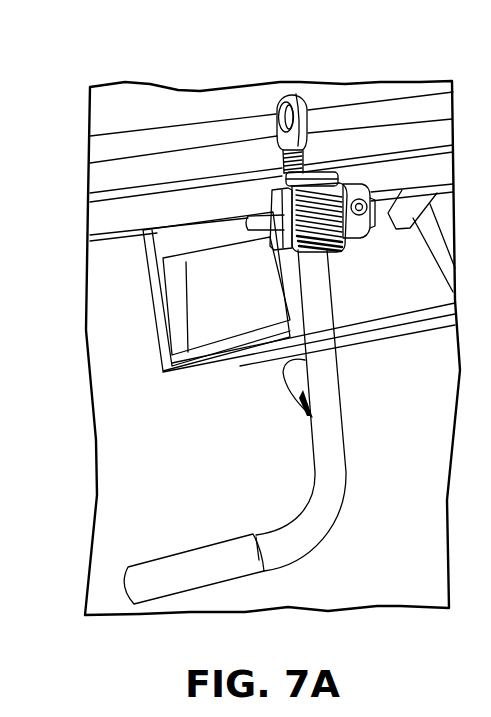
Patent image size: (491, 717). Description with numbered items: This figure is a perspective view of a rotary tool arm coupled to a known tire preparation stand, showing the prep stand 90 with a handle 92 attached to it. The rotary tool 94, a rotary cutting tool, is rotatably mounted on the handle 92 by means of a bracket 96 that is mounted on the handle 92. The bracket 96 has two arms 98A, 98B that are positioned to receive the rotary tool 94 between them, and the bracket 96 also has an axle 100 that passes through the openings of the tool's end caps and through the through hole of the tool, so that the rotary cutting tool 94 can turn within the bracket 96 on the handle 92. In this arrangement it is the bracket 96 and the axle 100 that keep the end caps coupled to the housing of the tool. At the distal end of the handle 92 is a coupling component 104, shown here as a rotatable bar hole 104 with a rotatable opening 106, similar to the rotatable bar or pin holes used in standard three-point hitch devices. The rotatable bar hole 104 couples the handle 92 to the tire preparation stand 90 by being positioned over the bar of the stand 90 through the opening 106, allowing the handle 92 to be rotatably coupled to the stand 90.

The prep stand 90 is at (58, 96).
The handle 92 is at (317, 508).
The rotary tool 94 is at (323, 180).
The bracket 96 is at (250, 179).
The arm 98A is at (280, 187).
The arm 98B is at (366, 192).
The axle 100 is at (266, 218).
The coupling component 104 is at (288, 74).
The rotatable opening 106 is at (259, 97).